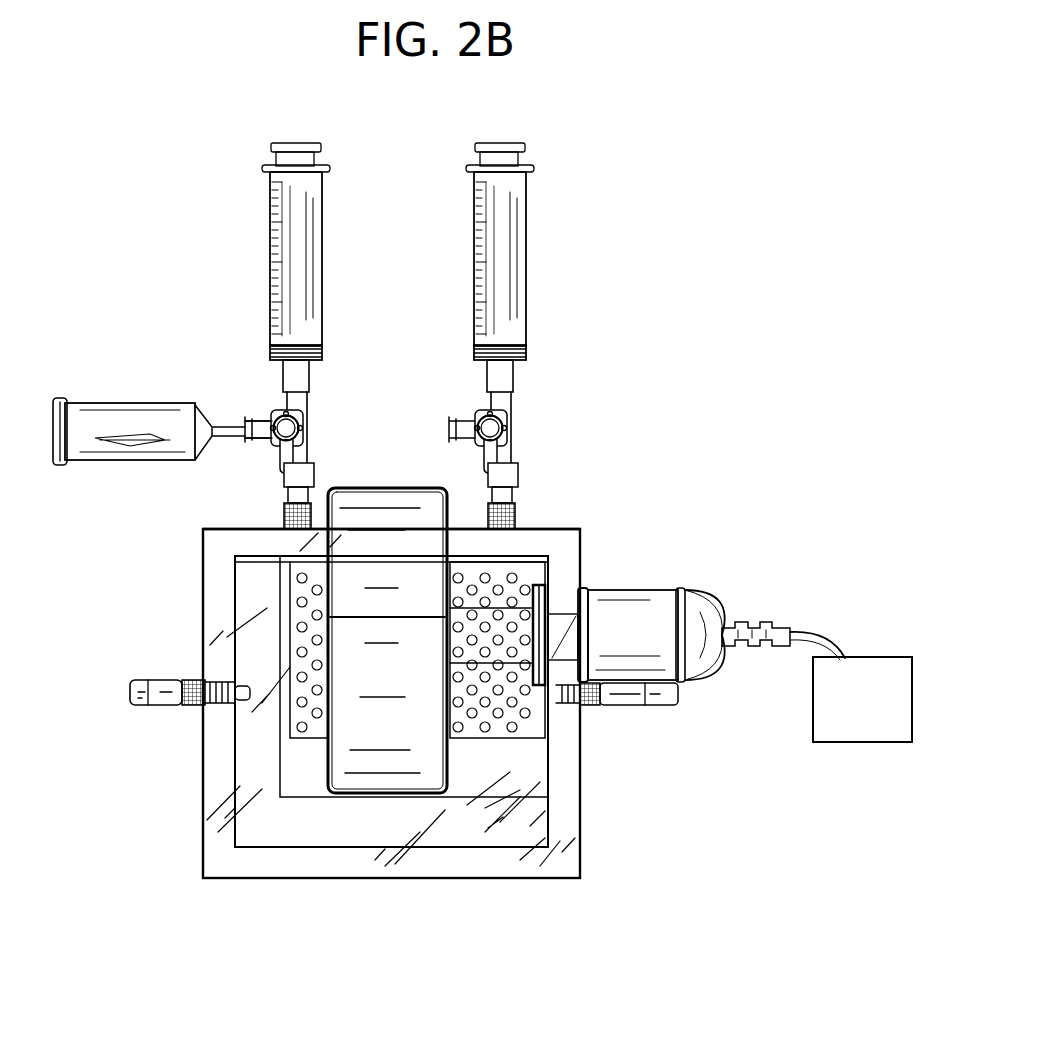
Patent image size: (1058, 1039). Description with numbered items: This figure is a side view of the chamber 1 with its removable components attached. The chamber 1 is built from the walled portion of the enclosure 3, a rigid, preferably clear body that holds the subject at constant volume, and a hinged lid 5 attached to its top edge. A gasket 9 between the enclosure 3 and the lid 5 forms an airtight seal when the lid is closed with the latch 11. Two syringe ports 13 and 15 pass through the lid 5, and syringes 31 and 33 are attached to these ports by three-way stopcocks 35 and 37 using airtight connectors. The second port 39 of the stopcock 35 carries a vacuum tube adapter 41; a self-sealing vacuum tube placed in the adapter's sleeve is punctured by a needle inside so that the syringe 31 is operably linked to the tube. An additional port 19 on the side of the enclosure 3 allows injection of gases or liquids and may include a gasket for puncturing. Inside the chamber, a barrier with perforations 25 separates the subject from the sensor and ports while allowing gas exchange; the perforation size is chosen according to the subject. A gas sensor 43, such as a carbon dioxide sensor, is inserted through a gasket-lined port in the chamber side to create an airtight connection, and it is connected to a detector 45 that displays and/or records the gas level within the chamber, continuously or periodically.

The chamber 1 is at (606, 822).
The enclosure 3 is at (207, 822).
The hinged lid 5 is at (581, 537).
The gasket 9 is at (263, 566).
The latch 11 is at (372, 505).
The syringe port 13 is at (283, 508).
The syringe port 15 is at (516, 512).
The additional port 19 is at (150, 678).
The perforations 25 is at (520, 728).
The syringe 31 is at (312, 288).
The syringe 33 is at (518, 286).
The 3-way stopcock 35 is at (302, 421).
The 3-way stopcock 37 is at (505, 421).
The second port 39 is at (258, 426).
The vacuum tube adapter 41 is at (172, 412).
The gas sensor 43 is at (640, 590).
The detector 45 is at (876, 657).